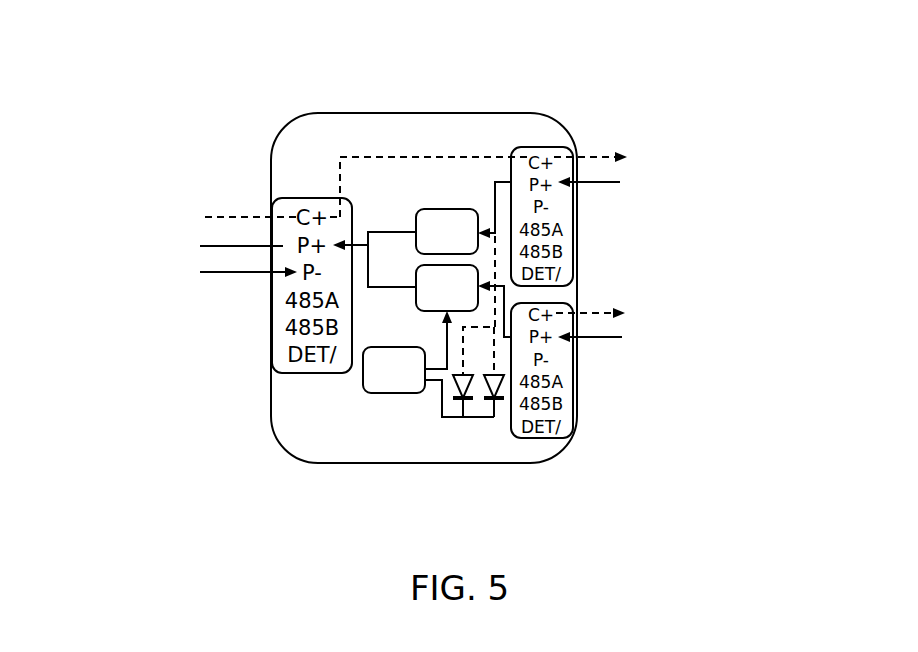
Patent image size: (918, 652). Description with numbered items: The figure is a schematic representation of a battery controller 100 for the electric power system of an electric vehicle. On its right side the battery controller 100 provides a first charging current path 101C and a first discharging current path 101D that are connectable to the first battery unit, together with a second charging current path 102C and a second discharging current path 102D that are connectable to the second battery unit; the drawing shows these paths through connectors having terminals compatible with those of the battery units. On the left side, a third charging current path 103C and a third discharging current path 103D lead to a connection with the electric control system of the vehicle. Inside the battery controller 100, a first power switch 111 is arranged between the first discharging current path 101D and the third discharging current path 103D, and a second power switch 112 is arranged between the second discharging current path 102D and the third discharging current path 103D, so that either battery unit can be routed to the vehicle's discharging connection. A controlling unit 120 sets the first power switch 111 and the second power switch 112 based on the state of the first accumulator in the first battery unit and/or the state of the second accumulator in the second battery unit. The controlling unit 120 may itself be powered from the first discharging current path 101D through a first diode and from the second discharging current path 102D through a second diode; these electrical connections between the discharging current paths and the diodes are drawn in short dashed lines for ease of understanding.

The battery controller 100 is at (560, 120).
The first charging current path 101C is at (478, 157).
The first discharging current path 101D is at (600, 183).
The second charging current path 102C is at (577, 300).
The second discharging current path 102D is at (605, 302).
The third charging current path 103C is at (240, 217).
The third discharging current path 103D is at (233, 244).
The first power switch 111 is at (443, 209).
The second power switch 112 is at (440, 265).
The controlling unit 120 is at (385, 393).